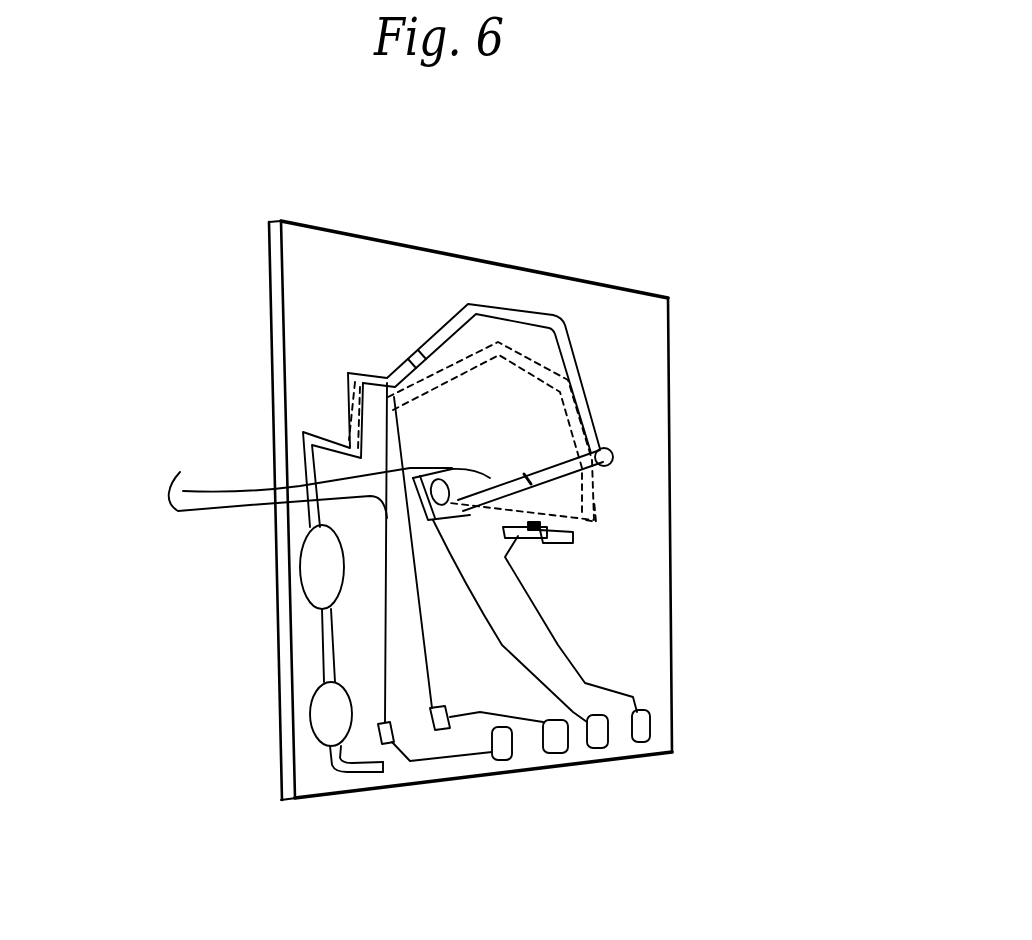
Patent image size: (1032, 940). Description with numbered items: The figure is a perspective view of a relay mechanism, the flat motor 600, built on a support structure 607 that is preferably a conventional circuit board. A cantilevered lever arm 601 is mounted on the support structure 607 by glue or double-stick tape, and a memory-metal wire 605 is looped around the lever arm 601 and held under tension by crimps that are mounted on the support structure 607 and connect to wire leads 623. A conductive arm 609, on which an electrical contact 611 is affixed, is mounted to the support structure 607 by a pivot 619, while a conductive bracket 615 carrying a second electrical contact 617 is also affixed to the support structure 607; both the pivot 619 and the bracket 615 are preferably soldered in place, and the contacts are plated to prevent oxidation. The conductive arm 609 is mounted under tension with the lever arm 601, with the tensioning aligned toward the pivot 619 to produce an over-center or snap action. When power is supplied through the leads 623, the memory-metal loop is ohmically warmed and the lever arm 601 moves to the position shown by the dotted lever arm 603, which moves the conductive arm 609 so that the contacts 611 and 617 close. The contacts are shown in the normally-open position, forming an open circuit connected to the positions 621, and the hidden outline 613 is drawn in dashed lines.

The flat motor 600 is at (195, 206).
The cantilevered lever arm 601 is at (461, 311).
The dotted lever arm 603 is at (532, 360).
The memory-metal wire 605 is at (304, 474).
The support structure 607 is at (282, 732).
The conductive arm 609 is at (489, 477).
The electrical contact 611 is at (528, 478).
The hidden conductor 613 is at (600, 523).
The conductive bracket 615 is at (563, 545).
The electrical contact 617 is at (537, 538).
The pivot 619 is at (455, 513).
The positions 621 is at (597, 728).
The wire leads 623 is at (567, 745).